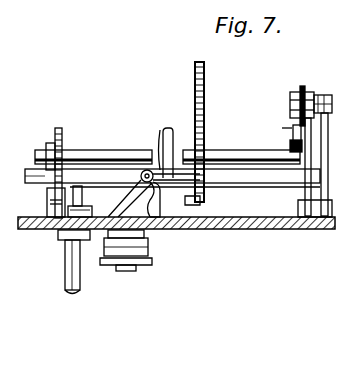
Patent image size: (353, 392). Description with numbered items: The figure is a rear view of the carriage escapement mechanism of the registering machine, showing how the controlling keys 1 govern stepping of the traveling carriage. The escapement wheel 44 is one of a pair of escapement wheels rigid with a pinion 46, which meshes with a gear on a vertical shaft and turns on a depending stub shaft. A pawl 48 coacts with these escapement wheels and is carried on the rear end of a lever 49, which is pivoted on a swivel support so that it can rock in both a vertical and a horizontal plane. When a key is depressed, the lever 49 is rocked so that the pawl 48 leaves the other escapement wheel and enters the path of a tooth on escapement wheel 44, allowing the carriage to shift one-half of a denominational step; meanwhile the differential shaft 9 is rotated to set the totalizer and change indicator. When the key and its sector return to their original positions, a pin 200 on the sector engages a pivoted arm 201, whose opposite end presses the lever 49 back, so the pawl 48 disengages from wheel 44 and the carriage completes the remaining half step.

The controlling keys 1 is at (284, 128).
The shaft 9 is at (90, 154).
The escapement wheel 44 is at (146, 240).
The pinion 46 is at (140, 252).
The pawl 48 is at (103, 242).
The lever 49 is at (60, 242).
The pin 200 is at (200, 206).
The pivoted arm 201 is at (161, 136).